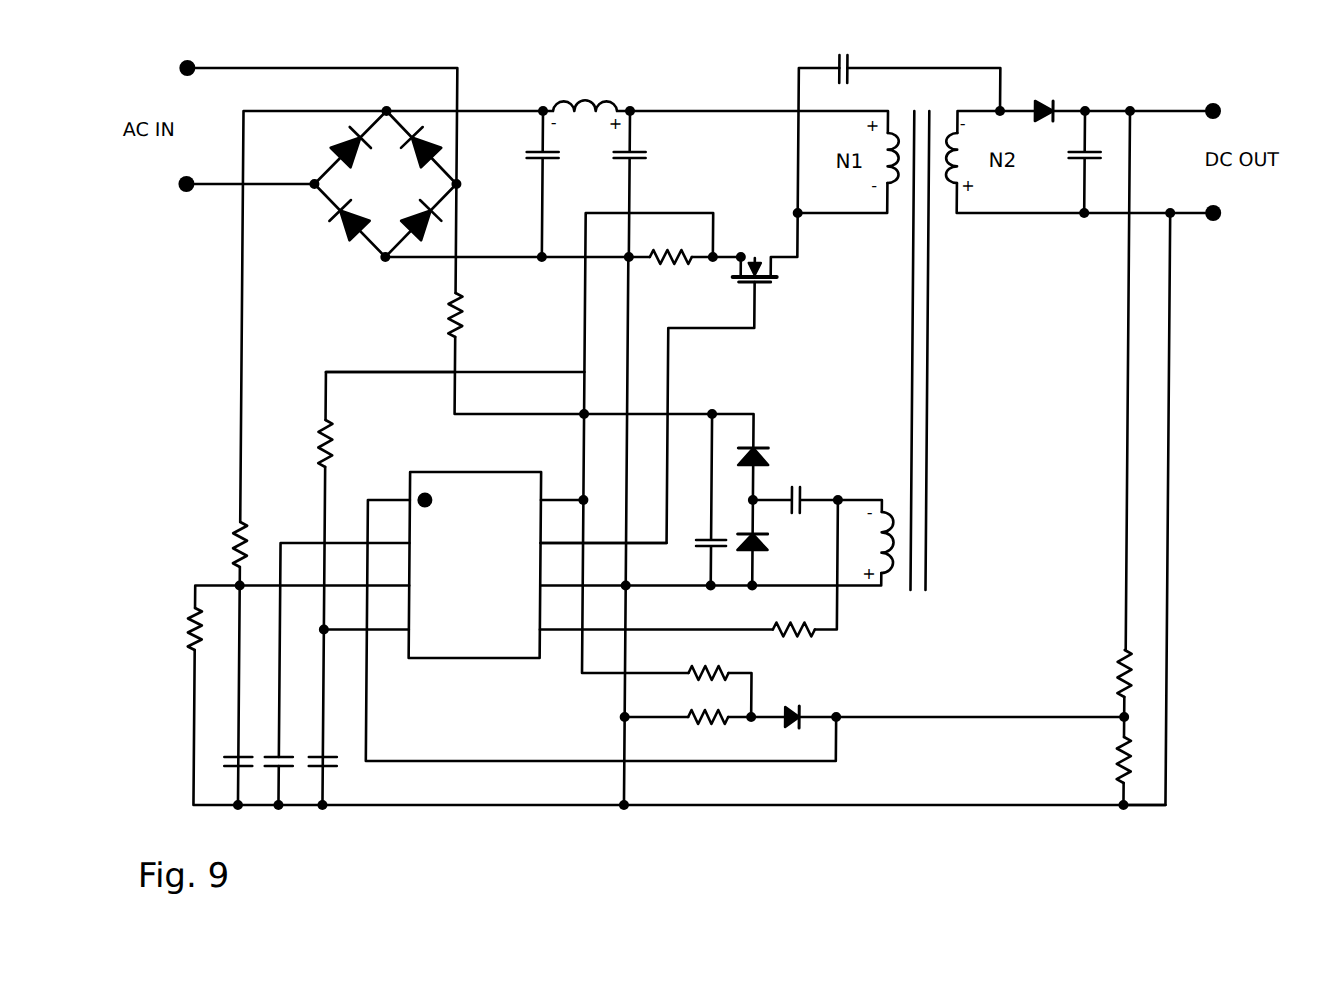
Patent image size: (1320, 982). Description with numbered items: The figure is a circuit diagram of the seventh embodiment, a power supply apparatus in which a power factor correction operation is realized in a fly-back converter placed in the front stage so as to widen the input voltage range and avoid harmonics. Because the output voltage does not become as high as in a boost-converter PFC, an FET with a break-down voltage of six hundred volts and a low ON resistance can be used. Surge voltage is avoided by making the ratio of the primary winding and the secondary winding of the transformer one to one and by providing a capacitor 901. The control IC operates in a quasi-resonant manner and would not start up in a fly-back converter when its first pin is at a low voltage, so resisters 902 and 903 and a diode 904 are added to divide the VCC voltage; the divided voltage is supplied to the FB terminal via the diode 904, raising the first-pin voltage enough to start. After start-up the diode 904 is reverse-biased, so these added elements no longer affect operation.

The capacitor 901 is at (836, 58).
The resister 902 is at (708, 663).
The resister 903 is at (708, 734).
The diode 904 is at (804, 697).